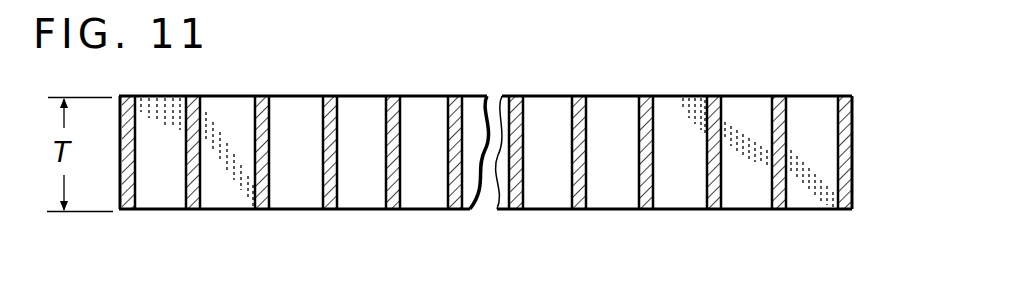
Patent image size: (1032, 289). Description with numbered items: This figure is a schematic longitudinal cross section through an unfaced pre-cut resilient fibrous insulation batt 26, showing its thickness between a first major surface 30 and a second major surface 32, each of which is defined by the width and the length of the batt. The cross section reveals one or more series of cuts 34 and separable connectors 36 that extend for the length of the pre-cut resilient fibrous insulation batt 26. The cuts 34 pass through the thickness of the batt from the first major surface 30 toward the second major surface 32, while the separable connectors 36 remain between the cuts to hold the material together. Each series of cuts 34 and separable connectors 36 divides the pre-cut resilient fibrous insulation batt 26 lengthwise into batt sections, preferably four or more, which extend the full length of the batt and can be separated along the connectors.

The pre-cut resilient fibrous insulation batt 26 is at (496, 146).
The first major surface 30 is at (595, 95).
The second major surface 32 is at (595, 212).
The cuts 34 is at (298, 123).
The separable connectors 36 is at (200, 172).